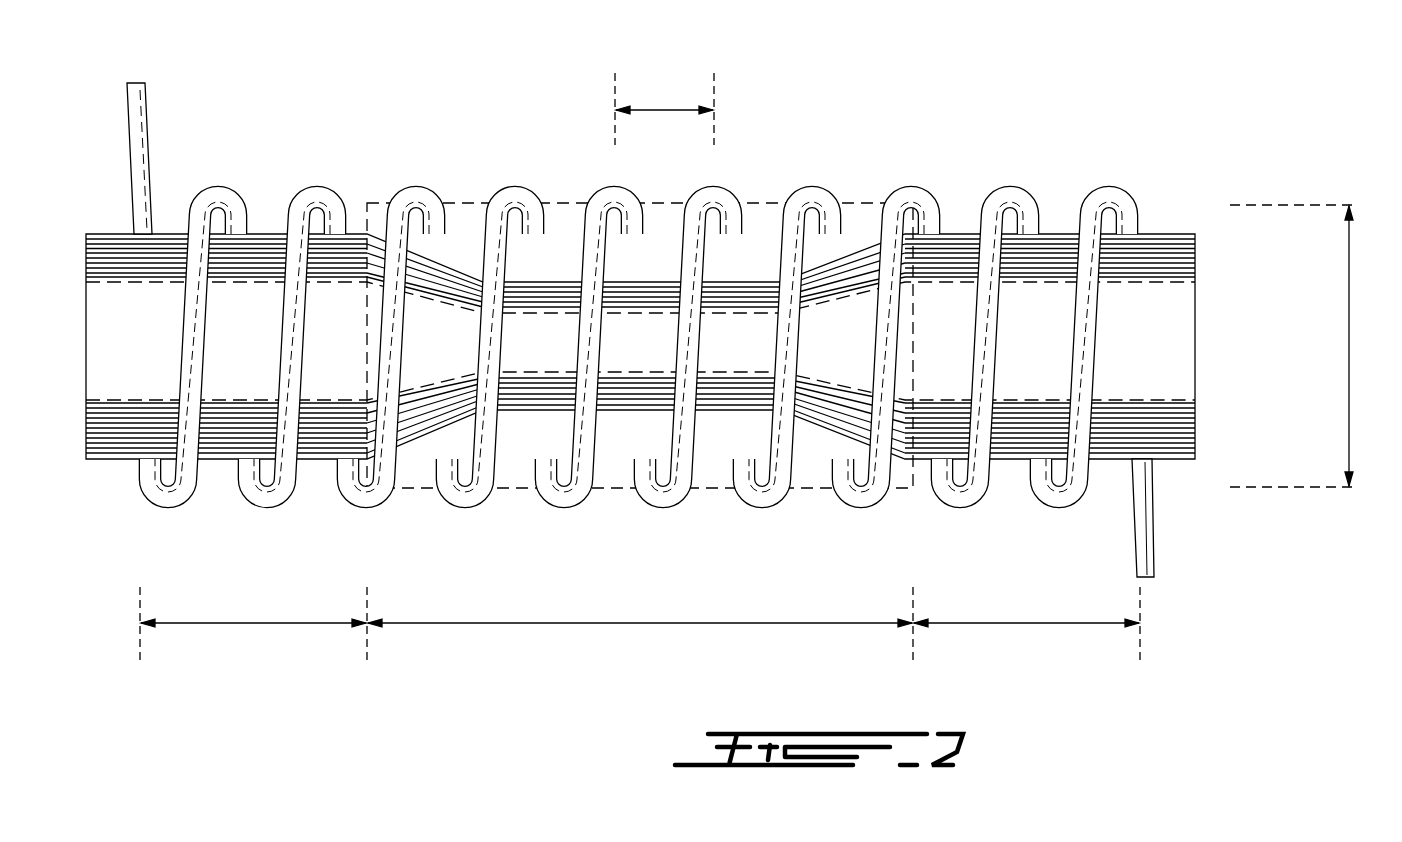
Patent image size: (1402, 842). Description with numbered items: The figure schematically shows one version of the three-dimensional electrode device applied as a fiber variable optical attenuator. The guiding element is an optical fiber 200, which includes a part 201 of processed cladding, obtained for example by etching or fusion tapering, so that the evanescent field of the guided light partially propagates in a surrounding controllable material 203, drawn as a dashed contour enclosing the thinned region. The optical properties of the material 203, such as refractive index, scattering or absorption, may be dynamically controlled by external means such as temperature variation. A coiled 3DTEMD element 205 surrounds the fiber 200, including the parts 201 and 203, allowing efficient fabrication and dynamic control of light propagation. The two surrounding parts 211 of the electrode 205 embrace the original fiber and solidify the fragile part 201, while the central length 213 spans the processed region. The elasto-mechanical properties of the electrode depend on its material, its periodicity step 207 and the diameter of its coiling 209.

The optical fiber 200 is at (640, 312).
The part of processed cladding 201 is at (735, 282).
The controllable material 203 is at (457, 203).
The 3DTEMD element 205 is at (215, 193).
The periodicity step 207 is at (664, 105).
The diameter of coiling 209 is at (1316, 346).
The surrounding parts of the electrode 211 is at (640, 631).
The central section length 213 is at (640, 647).